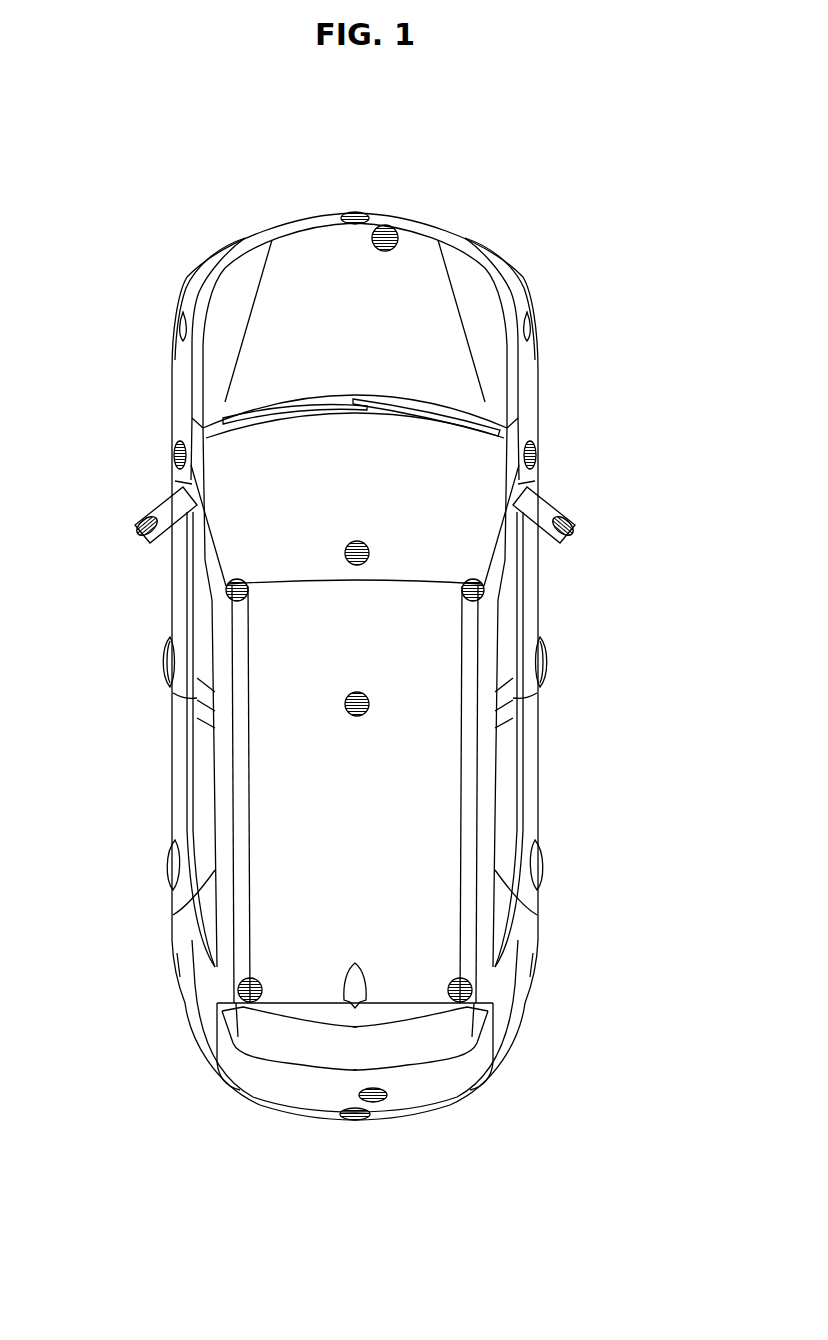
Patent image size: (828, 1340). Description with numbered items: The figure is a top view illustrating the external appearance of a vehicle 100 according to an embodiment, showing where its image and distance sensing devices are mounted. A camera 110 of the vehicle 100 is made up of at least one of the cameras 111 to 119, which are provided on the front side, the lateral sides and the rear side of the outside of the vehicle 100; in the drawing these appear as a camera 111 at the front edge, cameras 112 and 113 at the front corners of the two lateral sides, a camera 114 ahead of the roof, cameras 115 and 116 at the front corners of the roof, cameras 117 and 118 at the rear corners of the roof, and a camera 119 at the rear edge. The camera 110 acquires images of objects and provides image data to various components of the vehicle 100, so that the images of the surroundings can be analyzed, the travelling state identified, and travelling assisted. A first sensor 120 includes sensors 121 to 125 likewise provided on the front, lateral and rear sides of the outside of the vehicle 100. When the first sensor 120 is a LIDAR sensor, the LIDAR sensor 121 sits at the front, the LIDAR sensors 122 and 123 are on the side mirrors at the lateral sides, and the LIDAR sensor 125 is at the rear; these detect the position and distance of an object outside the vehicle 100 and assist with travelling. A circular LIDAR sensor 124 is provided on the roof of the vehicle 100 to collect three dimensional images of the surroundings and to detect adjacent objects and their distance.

The vehicle 100 is at (490, 200).
The camera 110 is at (390, 678).
The camera 111 is at (350, 213).
The camera 112 is at (178, 452).
The camera 113 is at (532, 452).
The camera 114 is at (360, 548).
The camera 115 is at (233, 583).
The camera 116 is at (477, 583).
The camera 117 is at (238, 986).
The camera 118 is at (472, 986).
The camera 119 is at (350, 1119).
The first sensor 120 is at (369, 700).
The LIDAR sensor 121 is at (385, 225).
The LIDAR sensor 122 is at (142, 525).
The LIDAR sensor 123 is at (568, 525).
The circular LIDAR sensor 124 is at (360, 698).
The LIDAR sensor 125 is at (383, 1103).